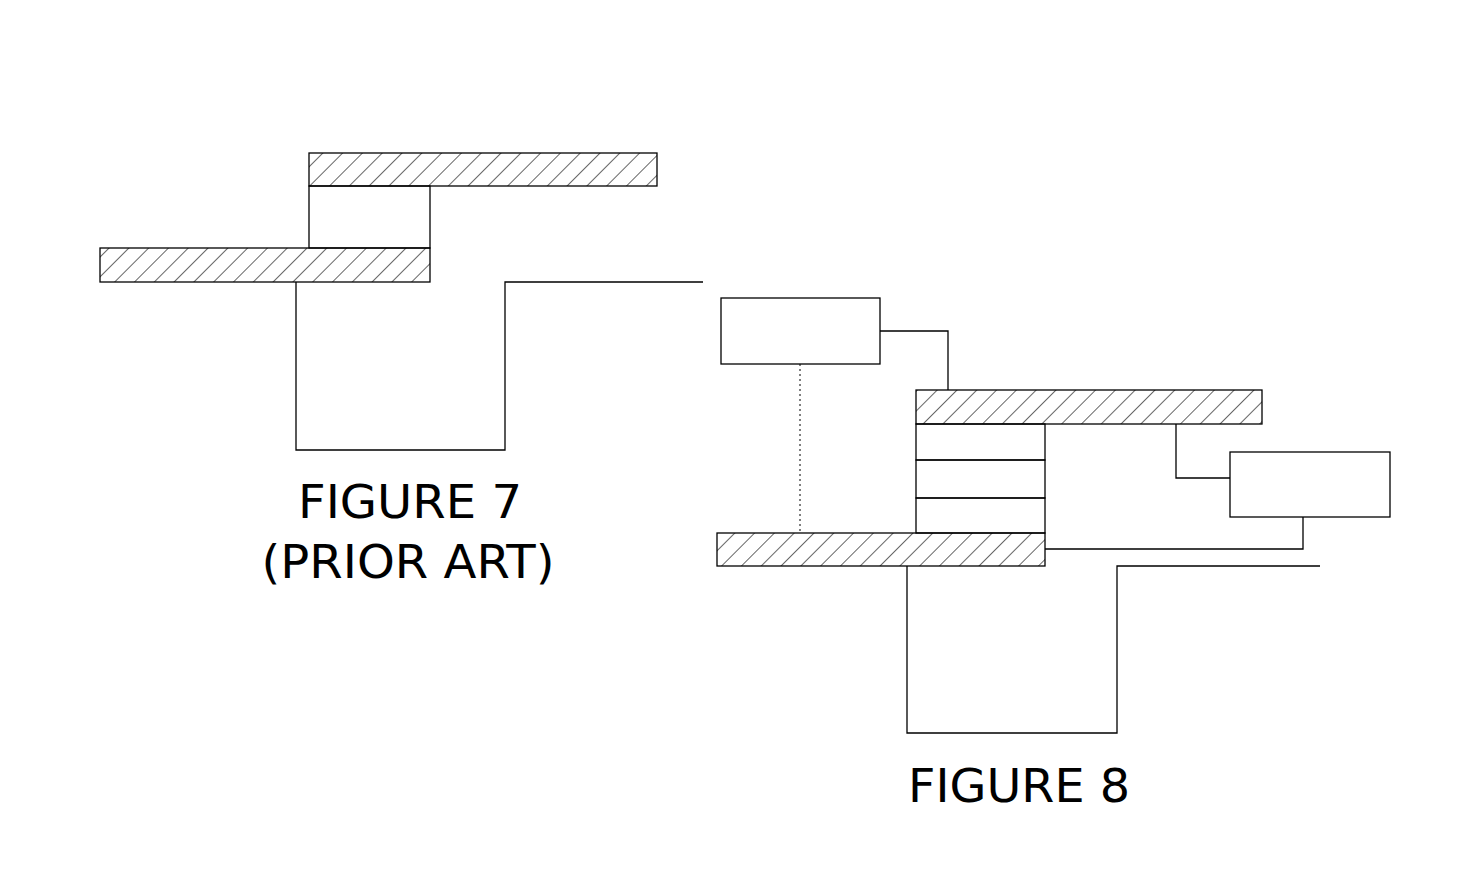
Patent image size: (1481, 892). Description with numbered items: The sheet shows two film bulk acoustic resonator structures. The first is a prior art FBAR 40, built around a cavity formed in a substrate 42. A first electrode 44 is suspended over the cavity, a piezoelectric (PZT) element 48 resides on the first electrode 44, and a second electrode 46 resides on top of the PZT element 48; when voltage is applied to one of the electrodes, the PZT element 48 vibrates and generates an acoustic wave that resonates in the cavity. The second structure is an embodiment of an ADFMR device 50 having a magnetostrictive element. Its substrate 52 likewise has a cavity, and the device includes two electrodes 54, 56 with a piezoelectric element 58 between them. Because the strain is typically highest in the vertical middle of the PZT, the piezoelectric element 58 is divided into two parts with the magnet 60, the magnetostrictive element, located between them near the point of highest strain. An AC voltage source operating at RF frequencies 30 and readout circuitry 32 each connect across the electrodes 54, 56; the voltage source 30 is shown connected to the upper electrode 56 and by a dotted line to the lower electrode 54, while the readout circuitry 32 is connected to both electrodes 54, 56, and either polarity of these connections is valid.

In FIG. 7, the FBAR 40 is at (448, 260).
In FIG. 7, the substrate 42 is at (508, 380).
In FIG. 7, the first electrode 44 is at (140, 245).
In FIG. 7, the second electrode 46 is at (657, 160).
In FIG. 7, the piezoelectric (PZT) element 48 is at (433, 230).
In FIG. 8, the AC voltage source operating at RF frequencies 30 is at (812, 297).
In FIG. 8, the readout circuitry 32 is at (1315, 450).
In FIG. 8, the device having a magnetostrictive element 50 is at (1073, 457).
In FIG. 8, the substrate 52 is at (1120, 668).
In FIG. 8, the electrode 54 is at (760, 531).
In FIG. 8, the electrode 56 is at (1110, 388).
In FIG. 8, the piezoelectric element 58 is at (994, 475).
In FIG. 8, the magnet 60 is at (916, 478).